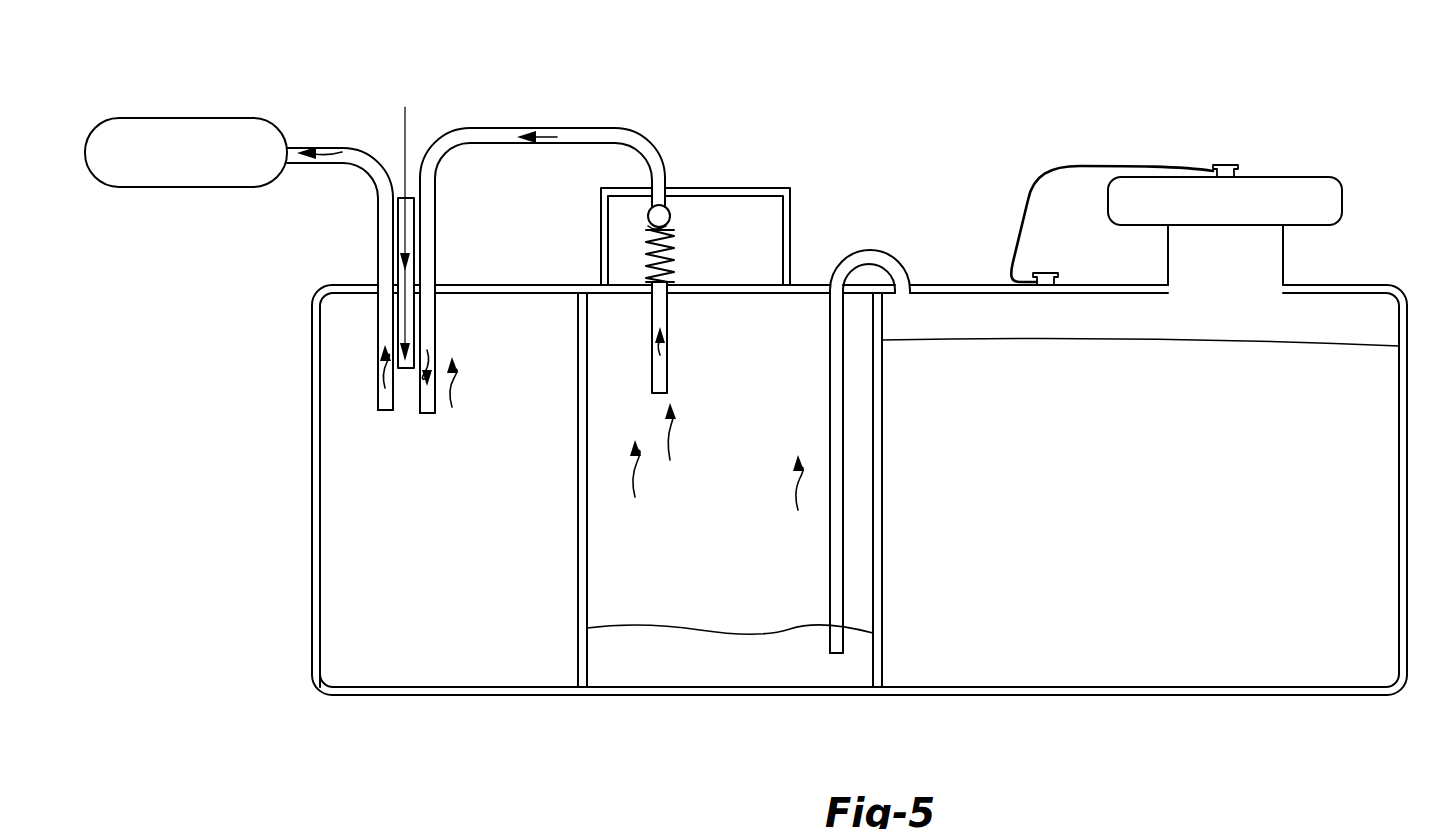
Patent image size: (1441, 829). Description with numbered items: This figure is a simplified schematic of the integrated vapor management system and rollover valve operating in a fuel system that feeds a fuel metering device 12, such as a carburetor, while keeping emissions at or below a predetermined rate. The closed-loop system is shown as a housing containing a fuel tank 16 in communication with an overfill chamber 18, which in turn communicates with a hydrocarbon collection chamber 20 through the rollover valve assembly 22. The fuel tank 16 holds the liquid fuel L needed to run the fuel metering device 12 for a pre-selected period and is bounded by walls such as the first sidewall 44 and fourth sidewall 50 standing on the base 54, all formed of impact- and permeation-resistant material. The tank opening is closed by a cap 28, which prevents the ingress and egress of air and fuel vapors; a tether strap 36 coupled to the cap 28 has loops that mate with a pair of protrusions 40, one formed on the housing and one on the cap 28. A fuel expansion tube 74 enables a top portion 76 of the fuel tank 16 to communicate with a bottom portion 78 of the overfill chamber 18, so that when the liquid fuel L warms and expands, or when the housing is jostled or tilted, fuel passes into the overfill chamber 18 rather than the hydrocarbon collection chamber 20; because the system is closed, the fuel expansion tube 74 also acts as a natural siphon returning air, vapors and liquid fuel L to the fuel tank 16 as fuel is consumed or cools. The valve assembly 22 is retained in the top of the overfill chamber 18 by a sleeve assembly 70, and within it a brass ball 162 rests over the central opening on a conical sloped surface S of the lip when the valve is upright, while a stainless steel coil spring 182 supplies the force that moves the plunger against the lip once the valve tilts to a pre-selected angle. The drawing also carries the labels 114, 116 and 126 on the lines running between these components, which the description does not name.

The fuel metering device 12 is at (188, 118).
The fuel tank 16 is at (1012, 708).
The overfill chamber 18 is at (762, 708).
The hydrocarbon collection chamber 20 is at (411, 708).
The valve assembly 22 is at (729, 176).
The cap 28 is at (1304, 163).
The tether strap 36 is at (1083, 165).
The protrusions 40 is at (1225, 163).
The first sidewall 44 is at (1398, 535).
The fourth sidewall 50 is at (1350, 330).
The base 54 is at (1203, 688).
The sleeve assembly 70 is at (803, 326).
The fuel expansion tube 74 is at (869, 251).
The top portion of the fuel tank 76 is at (1306, 315).
The bottom portion of the overfill chamber 78 is at (631, 598).
The vapor purge line 114 is at (378, 243).
The fresh air line 116 is at (400, 194).
The vapor vent line 126 is at (538, 128).
The ball 162 is at (671, 224).
The spring 182 is at (695, 252).
The sloped surface S is at (648, 219).
The liquid fuel L is at (857, 438).